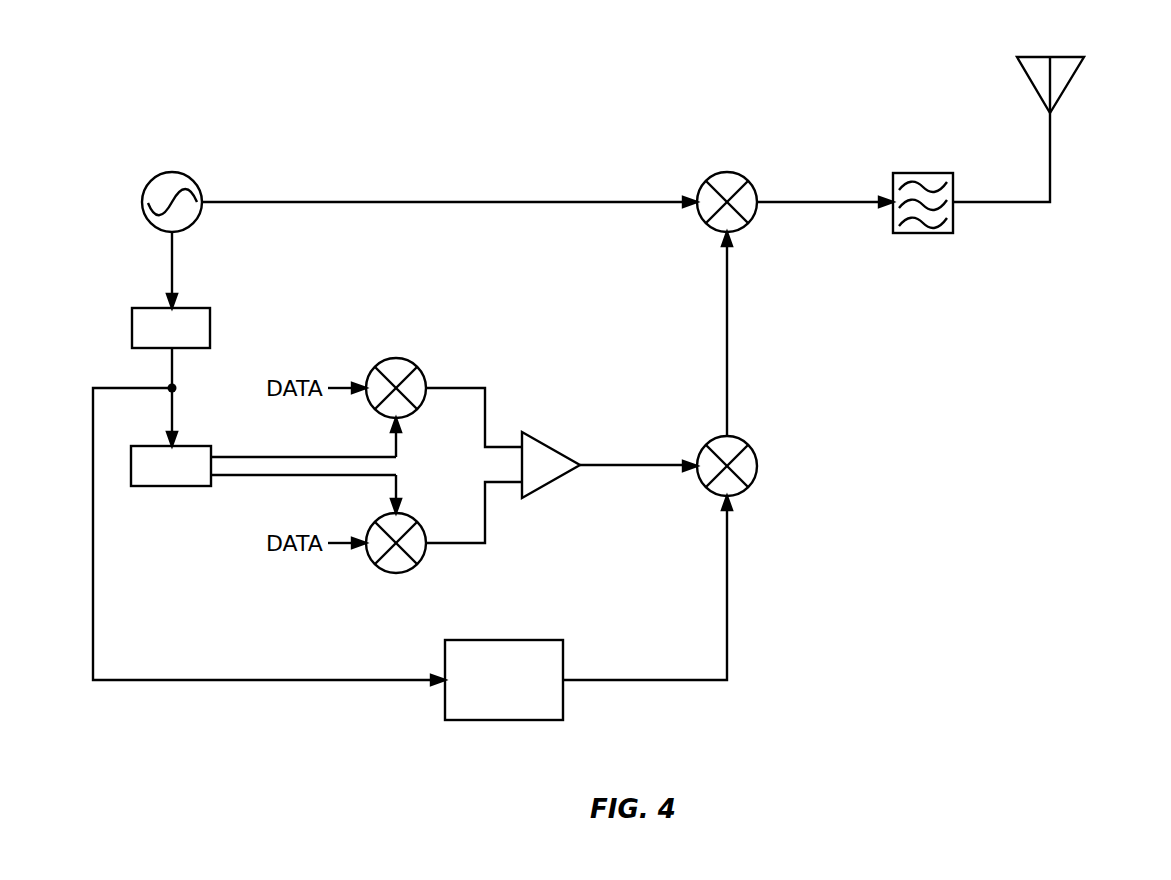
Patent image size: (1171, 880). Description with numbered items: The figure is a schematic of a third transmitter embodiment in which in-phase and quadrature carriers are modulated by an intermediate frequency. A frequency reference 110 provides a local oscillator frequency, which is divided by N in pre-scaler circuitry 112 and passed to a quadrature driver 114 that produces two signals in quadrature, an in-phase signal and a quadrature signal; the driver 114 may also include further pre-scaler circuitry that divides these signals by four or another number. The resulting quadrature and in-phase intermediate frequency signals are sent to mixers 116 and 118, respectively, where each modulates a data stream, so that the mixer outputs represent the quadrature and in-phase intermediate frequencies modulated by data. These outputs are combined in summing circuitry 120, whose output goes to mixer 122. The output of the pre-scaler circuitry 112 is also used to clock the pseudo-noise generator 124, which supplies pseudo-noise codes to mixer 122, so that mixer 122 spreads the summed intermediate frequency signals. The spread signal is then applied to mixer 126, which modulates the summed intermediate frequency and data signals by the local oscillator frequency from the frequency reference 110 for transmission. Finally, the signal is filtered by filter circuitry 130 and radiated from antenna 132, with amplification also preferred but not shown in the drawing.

The frequency reference 110 is at (189, 178).
The pre-scaler circuitry 112 is at (190, 308).
The quadrature driver 114 is at (190, 446).
The mixer 116 is at (414, 363).
The mixer 118 is at (412, 518).
The summing circuitry 120 is at (555, 448).
The mixer 122 is at (745, 446).
The pseudo-noise generator 124 is at (510, 640).
The mixer 126 is at (745, 180).
The filter circuitry 130 is at (925, 173).
The antenna 132 is at (1070, 84).